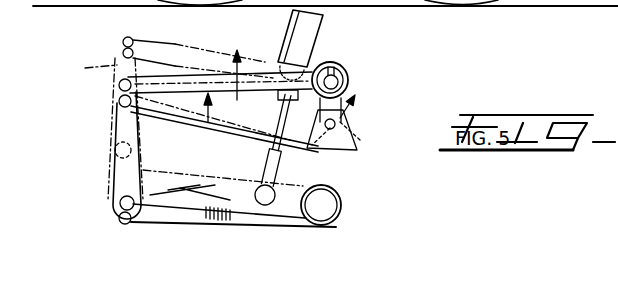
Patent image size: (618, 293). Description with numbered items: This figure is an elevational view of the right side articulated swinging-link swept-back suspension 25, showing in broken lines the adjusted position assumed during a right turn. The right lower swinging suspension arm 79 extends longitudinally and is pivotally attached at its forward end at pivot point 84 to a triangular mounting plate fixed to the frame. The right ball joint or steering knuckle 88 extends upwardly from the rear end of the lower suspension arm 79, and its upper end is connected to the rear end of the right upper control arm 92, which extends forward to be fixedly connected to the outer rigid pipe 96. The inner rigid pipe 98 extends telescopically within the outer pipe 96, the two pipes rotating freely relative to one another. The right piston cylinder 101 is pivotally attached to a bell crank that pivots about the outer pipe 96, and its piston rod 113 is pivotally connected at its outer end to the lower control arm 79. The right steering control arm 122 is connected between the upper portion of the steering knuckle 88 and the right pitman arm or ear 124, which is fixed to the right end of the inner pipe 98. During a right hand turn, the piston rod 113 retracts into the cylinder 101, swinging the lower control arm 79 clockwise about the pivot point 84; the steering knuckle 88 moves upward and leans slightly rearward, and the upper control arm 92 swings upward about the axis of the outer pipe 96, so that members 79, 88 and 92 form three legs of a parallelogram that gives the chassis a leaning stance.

The right side articulated swinging-link swept-back suspension 25 is at (84, 176).
The right lower swinging suspension arm 79 is at (190, 195).
The pivot point 84 is at (330, 202).
The right ball joint or steering knuckle 88 is at (113, 115).
The right upper control arm 92 is at (179, 75).
The outer rigid tube or pipe 96 is at (350, 78).
The inner rigid tube or pipe 98 is at (343, 75).
The right piston cylinder 101 is at (327, 22).
The right piston rod 113 is at (280, 140).
The right steering control arm 122 is at (200, 118).
The right pitman arm or ear 124 is at (355, 110).